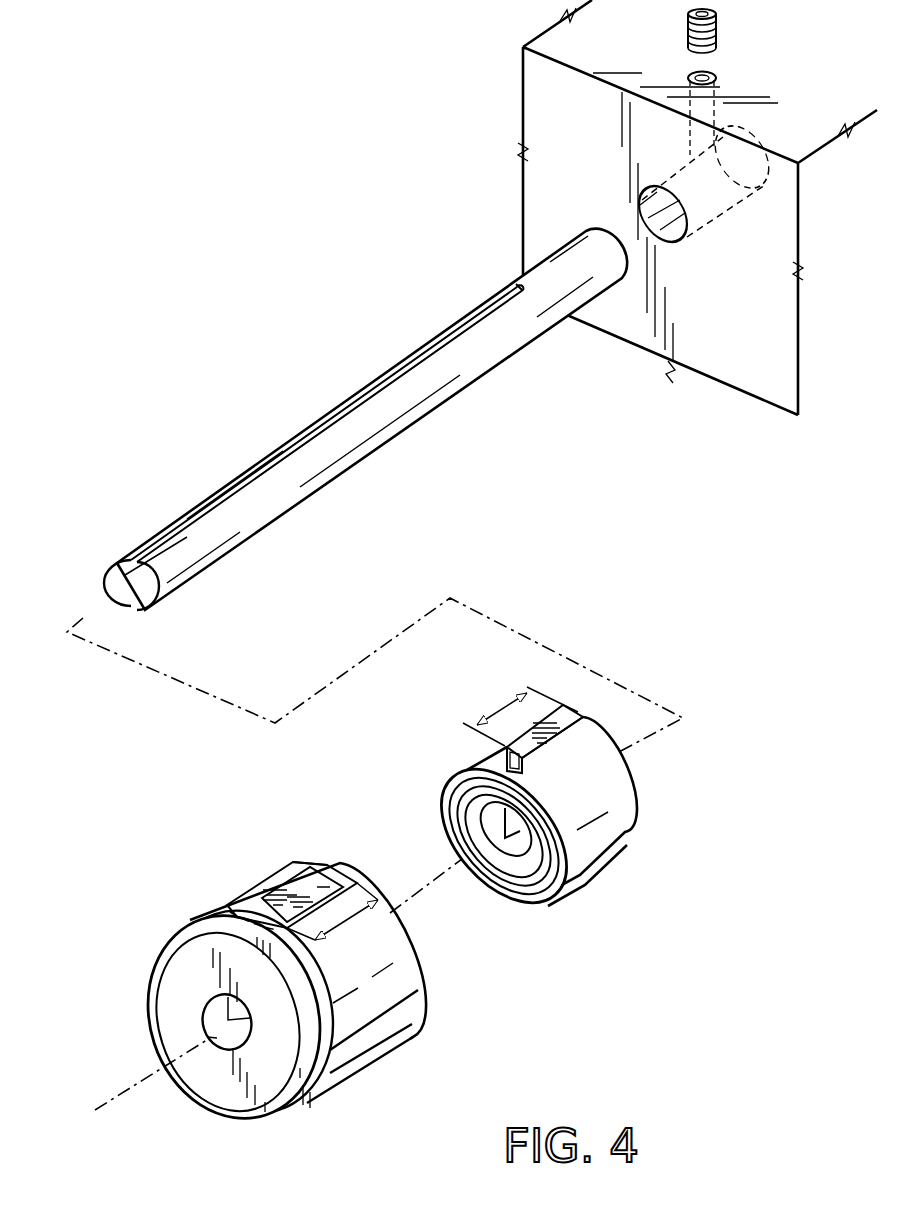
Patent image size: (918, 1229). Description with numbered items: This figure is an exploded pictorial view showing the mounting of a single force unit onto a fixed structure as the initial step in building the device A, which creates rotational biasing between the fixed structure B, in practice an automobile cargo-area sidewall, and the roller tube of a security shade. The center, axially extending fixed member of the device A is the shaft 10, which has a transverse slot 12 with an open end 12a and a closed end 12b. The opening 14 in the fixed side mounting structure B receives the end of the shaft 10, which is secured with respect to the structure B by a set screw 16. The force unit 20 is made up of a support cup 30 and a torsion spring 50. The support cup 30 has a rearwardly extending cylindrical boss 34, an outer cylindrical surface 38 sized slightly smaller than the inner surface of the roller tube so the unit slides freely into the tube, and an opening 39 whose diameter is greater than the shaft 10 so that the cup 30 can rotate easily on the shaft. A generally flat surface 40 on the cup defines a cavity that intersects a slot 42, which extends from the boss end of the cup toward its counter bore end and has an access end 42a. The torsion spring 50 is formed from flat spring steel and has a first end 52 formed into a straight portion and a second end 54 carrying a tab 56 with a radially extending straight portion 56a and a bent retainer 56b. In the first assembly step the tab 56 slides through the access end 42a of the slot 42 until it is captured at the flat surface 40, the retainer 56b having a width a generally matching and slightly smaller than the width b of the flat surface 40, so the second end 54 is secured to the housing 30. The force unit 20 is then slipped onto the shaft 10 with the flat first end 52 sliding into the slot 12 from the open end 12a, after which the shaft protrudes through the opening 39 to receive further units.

The fixed structure B is at (547, 33).
The opening 14 is at (670, 229).
The set screw 16 is at (718, 32).
The shaft 10 is at (400, 438).
The transverse slot 12 is at (322, 430).
The open end of slot 12a is at (131, 577).
The closed end of slot 12b is at (513, 285).
The force unit 20 is at (278, 981).
The support cup 30 is at (353, 1078).
The boss 34 is at (281, 1117).
The outer cylindrical surface 38 is at (387, 1046).
The opening 39 is at (227, 1043).
The flat surface 40 is at (297, 882).
The slot 42 is at (280, 900).
The access end 42a is at (328, 863).
The width of flat surface b is at (332, 917).
The torsion spring 50 is at (566, 775).
The second end of spring 54 is at (467, 765).
The first end of spring 52 is at (517, 840).
The tab 56 is at (603, 702).
The radially extending straight portion 56a is at (523, 762).
The bent retainer 56b is at (577, 711).
The width of retainer a is at (520, 712).
The device A is at (495, 987).